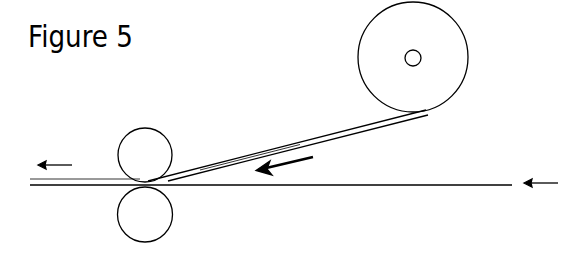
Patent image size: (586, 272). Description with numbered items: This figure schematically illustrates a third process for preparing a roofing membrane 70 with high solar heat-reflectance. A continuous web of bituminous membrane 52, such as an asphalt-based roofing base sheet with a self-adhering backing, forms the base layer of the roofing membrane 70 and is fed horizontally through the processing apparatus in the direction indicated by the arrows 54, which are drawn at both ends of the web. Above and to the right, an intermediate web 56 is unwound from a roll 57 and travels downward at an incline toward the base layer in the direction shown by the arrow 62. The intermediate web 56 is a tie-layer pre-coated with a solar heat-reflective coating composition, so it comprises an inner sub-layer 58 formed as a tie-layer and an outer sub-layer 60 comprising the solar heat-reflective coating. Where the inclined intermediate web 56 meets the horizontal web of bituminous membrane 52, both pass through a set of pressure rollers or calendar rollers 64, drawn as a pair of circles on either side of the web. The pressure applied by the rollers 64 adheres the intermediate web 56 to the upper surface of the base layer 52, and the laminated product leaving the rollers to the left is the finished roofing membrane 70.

The web of bituminous membrane 52 is at (379, 183).
The arrows 54 is at (60, 165).
The intermediate web 56 is at (328, 131).
The roll 57 is at (442, 42).
The inner sub-layer 58 is at (367, 125).
The outer sub-layer 60 is at (287, 144).
The arrow 62 is at (300, 160).
The pressure rollers 64 is at (147, 210).
The roofing membrane 70 is at (58, 187).